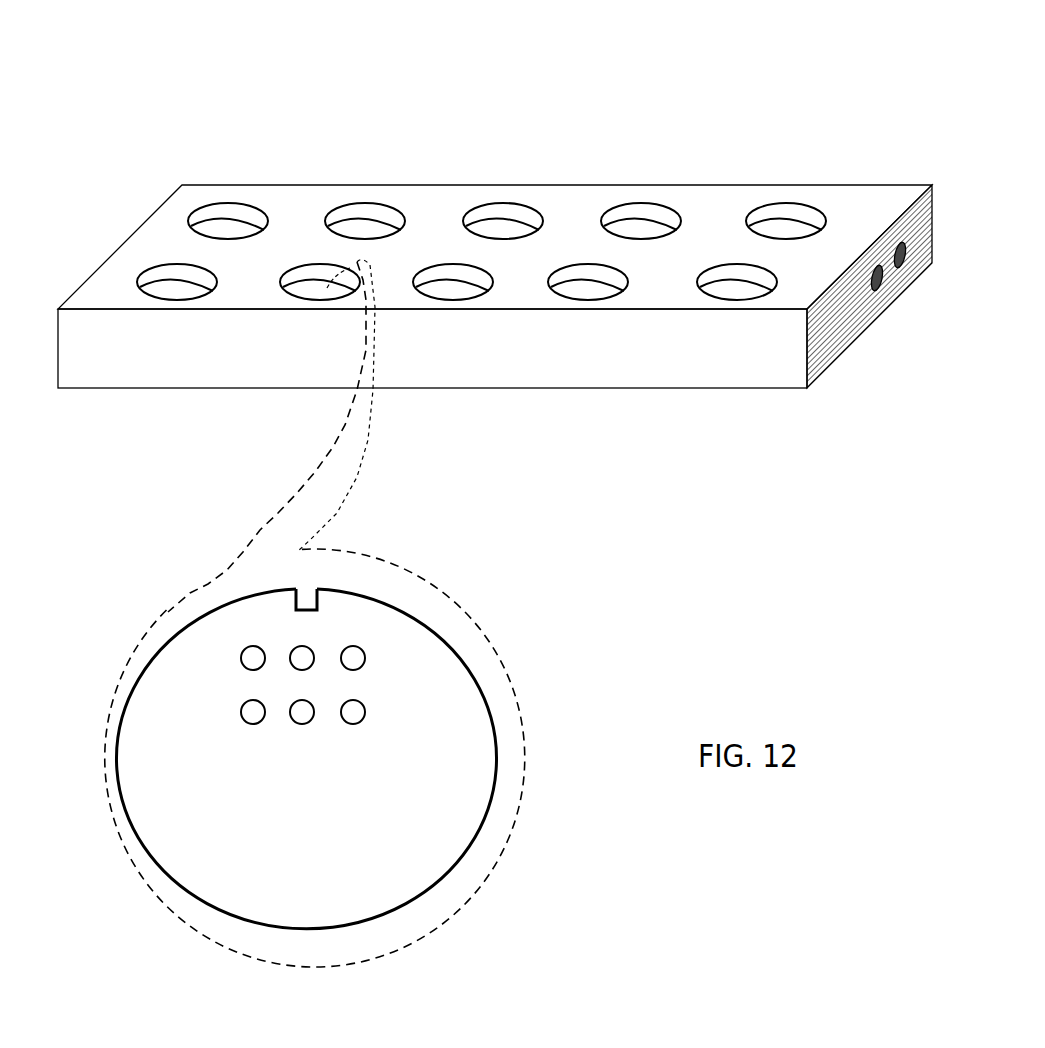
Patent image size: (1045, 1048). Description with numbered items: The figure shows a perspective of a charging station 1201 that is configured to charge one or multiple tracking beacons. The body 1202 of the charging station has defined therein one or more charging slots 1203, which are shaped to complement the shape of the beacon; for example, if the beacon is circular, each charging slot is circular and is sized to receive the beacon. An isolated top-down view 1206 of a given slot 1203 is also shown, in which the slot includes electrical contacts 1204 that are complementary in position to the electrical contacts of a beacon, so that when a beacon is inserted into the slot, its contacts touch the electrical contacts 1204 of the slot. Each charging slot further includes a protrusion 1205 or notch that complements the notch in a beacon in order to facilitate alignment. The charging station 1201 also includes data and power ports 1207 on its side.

The charging station 1201 is at (252, 80).
The body 1202 is at (423, 200).
The charging slots 1203 is at (638, 237).
The electrical contacts 1204 is at (355, 710).
The protrusion 1205 is at (293, 602).
The top-down view 1206 is at (172, 600).
The data and power ports 1207 is at (900, 259).